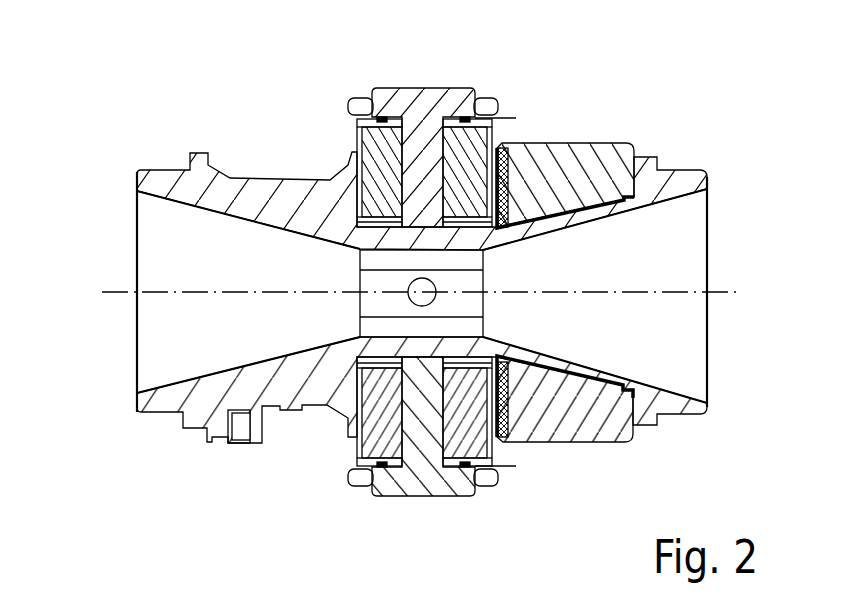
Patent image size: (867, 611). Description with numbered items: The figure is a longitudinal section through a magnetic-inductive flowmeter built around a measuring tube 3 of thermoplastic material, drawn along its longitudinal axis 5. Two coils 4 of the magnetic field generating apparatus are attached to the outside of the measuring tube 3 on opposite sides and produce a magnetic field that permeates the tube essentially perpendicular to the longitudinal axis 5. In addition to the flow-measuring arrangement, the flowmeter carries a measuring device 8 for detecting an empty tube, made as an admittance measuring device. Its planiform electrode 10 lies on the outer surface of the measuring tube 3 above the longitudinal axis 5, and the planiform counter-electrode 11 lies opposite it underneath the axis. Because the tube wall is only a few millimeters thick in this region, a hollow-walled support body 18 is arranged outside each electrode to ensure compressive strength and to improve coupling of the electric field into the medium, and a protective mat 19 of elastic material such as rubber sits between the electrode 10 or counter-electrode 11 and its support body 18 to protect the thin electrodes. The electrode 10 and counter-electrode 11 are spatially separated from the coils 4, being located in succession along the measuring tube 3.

The measuring tube 3 is at (163, 177).
The coils 4 is at (375, 143).
The longitudinal axis 5 is at (117, 292).
The measuring device 8 is at (518, 483).
The electrode 10 is at (615, 213).
The counter-electrode 11 is at (607, 372).
The hollow-walled support body 18 is at (553, 178).
The protective mat 19 is at (606, 200).